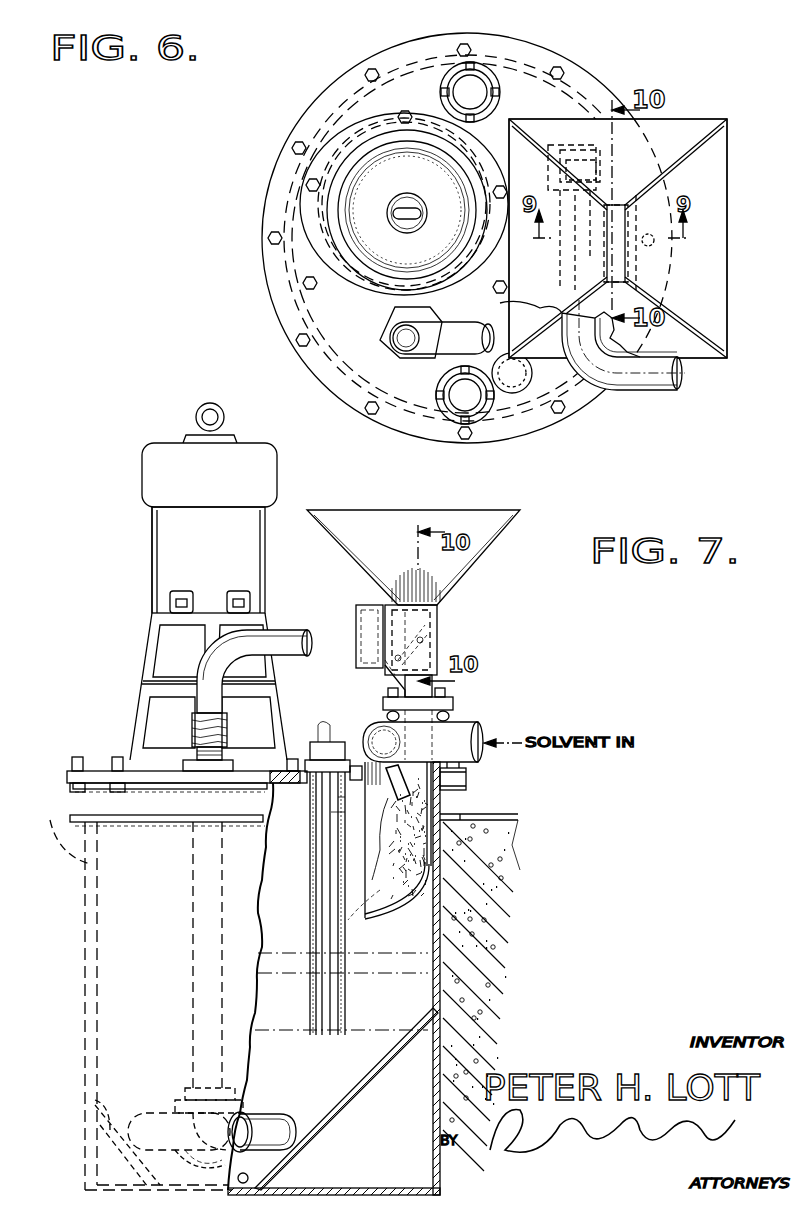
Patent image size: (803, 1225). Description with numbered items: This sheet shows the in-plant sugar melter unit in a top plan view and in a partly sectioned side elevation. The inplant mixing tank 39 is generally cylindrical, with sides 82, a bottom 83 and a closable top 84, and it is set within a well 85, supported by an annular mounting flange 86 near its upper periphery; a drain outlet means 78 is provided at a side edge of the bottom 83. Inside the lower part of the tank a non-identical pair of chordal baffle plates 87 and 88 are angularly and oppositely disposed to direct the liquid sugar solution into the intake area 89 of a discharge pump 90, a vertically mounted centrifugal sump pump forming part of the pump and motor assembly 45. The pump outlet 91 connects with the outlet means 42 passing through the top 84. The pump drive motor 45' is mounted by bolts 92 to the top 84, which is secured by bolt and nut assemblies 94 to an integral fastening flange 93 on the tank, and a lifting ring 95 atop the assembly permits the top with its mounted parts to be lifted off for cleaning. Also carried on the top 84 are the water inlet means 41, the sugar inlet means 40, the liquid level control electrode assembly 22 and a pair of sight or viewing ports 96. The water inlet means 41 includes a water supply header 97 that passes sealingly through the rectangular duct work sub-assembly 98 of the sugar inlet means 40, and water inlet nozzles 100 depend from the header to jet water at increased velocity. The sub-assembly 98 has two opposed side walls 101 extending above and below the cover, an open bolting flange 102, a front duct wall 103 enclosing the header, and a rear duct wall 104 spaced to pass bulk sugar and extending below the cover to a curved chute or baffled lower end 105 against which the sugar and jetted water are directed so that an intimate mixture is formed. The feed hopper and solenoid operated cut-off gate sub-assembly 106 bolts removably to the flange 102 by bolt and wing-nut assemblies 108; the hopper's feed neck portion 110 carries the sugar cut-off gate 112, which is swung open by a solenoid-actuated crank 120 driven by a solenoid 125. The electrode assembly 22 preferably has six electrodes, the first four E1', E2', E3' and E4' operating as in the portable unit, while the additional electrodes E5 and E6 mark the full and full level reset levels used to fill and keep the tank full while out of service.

In FIG. 6, the inplant mixing tank 39 is at (355, 108).
In FIG. 7, the inplant mixing tank 39 is at (95, 808).
In FIG. 6, the sugar inlet means 40 is at (682, 108).
In FIG. 7, the sugar inlet means 40 is at (470, 704).
In FIG. 6, the water inlet means 41 is at (563, 314).
In FIG. 7, the water inlet means 41 is at (398, 742).
In FIG. 6, the outlet means 42 is at (388, 350).
In FIG. 7, the outlet means 42 is at (188, 745).
In FIG. 6, the pump and motor assembly 45 is at (407, 210).
In FIG. 7, the pump and motor assembly 45 is at (208, 597).
In FIG. 7, the pump drive motor 45' is at (121, 560).
In FIG. 6, the pump outlet 91 is at (410, 302).
In FIG. 6, the bolts 92 is at (404, 112).
In FIG. 7, the bolts 92 is at (117, 757).
In FIG. 6, the bolt and nut assemblies 94 is at (297, 148).
In FIG. 7, the bolt and nut assemblies 94 is at (77, 757).
In FIG. 6, the lifting ring 95 is at (413, 209).
In FIG. 7, the lifting ring 95 is at (196, 415).
In FIG. 6, the sight or viewing ports 96 is at (473, 90).
In FIG. 6, the feed hopper and solenoid operated cut-off gate sub-assembly 106 is at (632, 202).
In FIG. 7, the feed hopper and solenoid operated cut-off gate sub-assembly 106 is at (437, 636).
In FIG. 6, the solenoid-actuated crank 120 is at (597, 168).
In FIG. 6, the liquid level control electrode assembly 22 is at (520, 395).
In FIG. 7, the liquid level control electrode assembly 22 is at (350, 770).
In FIG. 7, the drain outlet means 78 is at (262, 1147).
In FIG. 7, the sides 82 is at (88, 972).
In FIG. 7, the bottom 83 is at (351, 1164).
In FIG. 7, the top 84 is at (86, 771).
In FIG. 7, the well 85 is at (86, 1022).
In FIG. 7, the mounting flange 86 is at (155, 815).
In FIG. 7, the chordal baffle plate 87 is at (340, 1100).
In FIG. 7, the chordal baffle plate 88 is at (95, 1100).
In FIG. 7, the intake area 89 is at (178, 1160).
In FIG. 7, the discharge pump 90 is at (148, 1112).
In FIG. 7, the fastening flange 93 is at (95, 786).
In FIG. 7, the water supply header 97 is at (340, 745).
In FIG. 7, the duct work sub-assembly 98 is at (480, 735).
In FIG. 7, the water inlet nozzles 100 is at (387, 840).
In FIG. 7, the side walls 101 is at (368, 848).
In FIG. 7, the bolting flange 102 is at (455, 705).
In FIG. 7, the front duct wall 103 is at (320, 742).
In FIG. 7, the rear duct wall 104 is at (455, 800).
In FIG. 7, the curved chute or baffled lower end 105 is at (392, 905).
In FIG. 7, the bolt and wing-nut assemblies 108 is at (446, 694).
In FIG. 7, the feed neck portion 110 is at (432, 614).
In FIG. 7, the sugar cut-off gate 112 is at (392, 672).
In FIG. 7, the solenoid 125 is at (368, 612).
In FIG. 7, the electrode E5 is at (348, 796).
In FIG. 7, the electrode E6 is at (345, 811).
In FIG. 7, the electrode E3' is at (346, 944).
In FIG. 7, the electrode E4' is at (350, 988).
In FIG. 7, the electrode E1' is at (327, 991).
In FIG. 7, the electrode E2' is at (332, 1041).